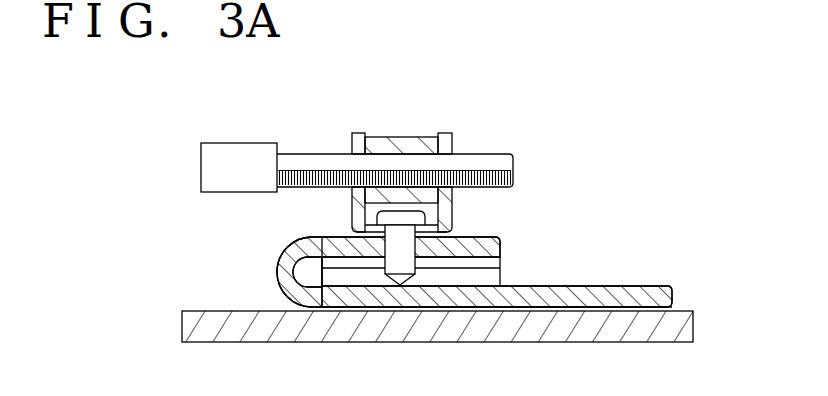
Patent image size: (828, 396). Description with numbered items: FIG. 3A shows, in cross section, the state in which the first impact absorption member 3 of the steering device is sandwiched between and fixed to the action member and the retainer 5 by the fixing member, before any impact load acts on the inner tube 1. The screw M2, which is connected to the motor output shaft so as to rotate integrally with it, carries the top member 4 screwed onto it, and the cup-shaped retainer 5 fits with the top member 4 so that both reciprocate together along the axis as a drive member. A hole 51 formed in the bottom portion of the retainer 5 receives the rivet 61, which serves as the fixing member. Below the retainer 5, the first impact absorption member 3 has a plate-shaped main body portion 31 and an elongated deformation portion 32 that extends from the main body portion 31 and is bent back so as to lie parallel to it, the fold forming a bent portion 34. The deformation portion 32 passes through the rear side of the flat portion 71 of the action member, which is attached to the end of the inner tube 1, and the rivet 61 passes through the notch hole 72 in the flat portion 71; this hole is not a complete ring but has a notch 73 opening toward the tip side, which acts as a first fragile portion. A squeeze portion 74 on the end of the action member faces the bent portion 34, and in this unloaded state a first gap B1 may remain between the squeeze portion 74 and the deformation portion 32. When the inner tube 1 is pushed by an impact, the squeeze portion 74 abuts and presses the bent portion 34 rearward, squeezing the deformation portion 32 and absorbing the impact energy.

The inner tube 1 is at (218, 310).
The first impact absorption member 3 is at (447, 251).
The main body portion 31 is at (500, 239).
The deformation portion 32 is at (622, 287).
The bent portion 34 is at (293, 248).
The top member 4 is at (364, 154).
The retainer 5 is at (458, 140).
The hole 51 is at (351, 224).
The rivet 61 is at (452, 230).
The flat portion 71 is at (500, 259).
The notch hole 72 is at (284, 292).
The notch 73 is at (441, 307).
The squeeze portion 74 is at (308, 275).
The first gap B1 is at (278, 261).
The screw M2 is at (304, 153).